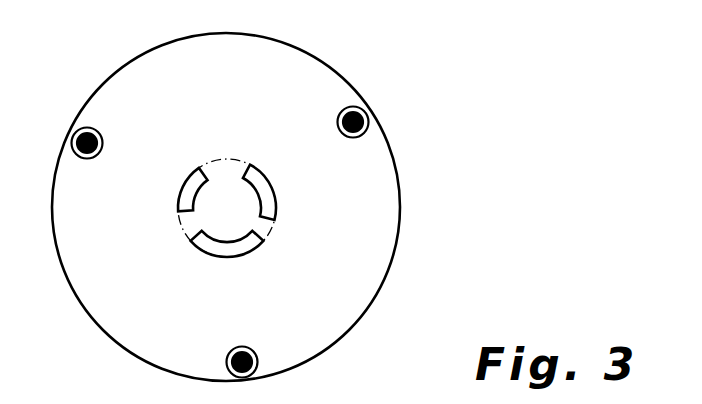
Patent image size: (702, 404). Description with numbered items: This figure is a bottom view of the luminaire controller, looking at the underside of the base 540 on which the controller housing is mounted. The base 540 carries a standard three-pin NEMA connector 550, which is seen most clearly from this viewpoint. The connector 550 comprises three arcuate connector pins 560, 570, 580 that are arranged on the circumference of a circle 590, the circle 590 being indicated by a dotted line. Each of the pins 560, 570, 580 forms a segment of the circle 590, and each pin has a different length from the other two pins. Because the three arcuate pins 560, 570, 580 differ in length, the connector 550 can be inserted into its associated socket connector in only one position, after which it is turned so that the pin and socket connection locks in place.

The base 540 is at (377, 170).
The three-pin NEMA connector 550 is at (292, 216).
The arcuate connector pin 560 is at (182, 183).
The arcuate connector pin 570 is at (200, 252).
The arcuate connector pin 580 is at (273, 191).
The circle 590 is at (238, 158).